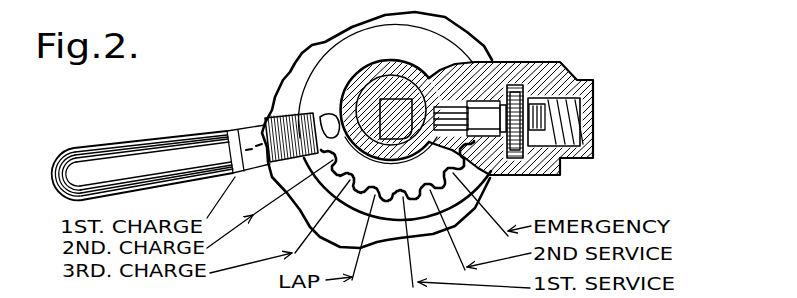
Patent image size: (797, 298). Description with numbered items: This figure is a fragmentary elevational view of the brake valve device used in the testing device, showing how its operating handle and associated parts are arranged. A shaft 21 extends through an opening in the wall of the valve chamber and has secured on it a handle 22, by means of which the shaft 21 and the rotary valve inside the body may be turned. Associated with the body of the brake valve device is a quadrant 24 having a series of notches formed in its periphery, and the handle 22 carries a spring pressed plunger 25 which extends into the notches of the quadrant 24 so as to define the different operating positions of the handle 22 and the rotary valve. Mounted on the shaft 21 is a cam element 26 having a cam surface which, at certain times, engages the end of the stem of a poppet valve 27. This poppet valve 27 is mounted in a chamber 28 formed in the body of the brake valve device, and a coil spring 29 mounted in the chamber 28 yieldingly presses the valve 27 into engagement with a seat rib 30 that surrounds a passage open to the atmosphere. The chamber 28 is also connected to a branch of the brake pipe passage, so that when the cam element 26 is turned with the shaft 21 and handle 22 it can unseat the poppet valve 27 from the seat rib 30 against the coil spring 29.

The shaft 21 is at (400, 110).
The handle 22 is at (97, 155).
The quadrant 24 is at (328, 116).
The spring pressed plunger 25 is at (316, 125).
The cam element 26 is at (387, 82).
The poppet valve 27 is at (484, 66).
The chamber 28 is at (527, 177).
The coil spring 29 is at (568, 82).
The seat rib 30 is at (517, 72).